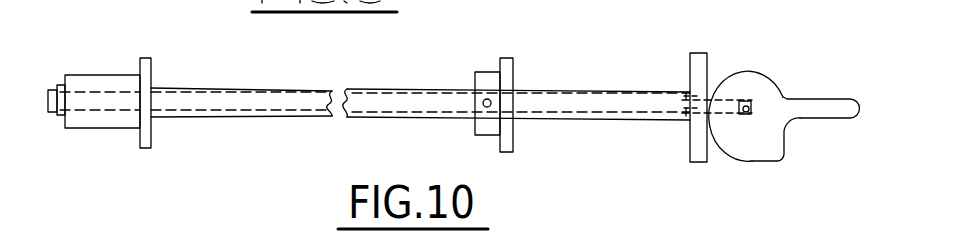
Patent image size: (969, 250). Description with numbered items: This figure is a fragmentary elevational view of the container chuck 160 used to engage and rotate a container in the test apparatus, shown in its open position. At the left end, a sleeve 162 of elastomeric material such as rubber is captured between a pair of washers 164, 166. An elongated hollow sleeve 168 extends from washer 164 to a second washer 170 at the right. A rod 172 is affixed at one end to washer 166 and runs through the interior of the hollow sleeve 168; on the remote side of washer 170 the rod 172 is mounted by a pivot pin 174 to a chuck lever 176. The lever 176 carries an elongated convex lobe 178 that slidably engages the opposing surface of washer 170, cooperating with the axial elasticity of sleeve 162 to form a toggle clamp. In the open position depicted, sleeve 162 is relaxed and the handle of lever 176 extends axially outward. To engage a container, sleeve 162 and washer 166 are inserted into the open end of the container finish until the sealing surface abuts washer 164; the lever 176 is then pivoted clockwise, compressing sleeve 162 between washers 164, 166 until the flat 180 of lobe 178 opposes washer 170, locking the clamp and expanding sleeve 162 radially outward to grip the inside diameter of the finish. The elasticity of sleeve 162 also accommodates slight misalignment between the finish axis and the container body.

The chuck 160 is at (682, 34).
The sleeve 162 is at (106, 78).
The washer 164 is at (152, 62).
The washer 166 is at (62, 85).
The hollow sleeve 168 is at (265, 88).
The second washer 170 is at (690, 67).
The rod 172 is at (355, 88).
The pivot pin 174 is at (752, 110).
The chuck lever 176 is at (843, 100).
The convex lobe 178 is at (742, 151).
The flat 180 is at (768, 160).